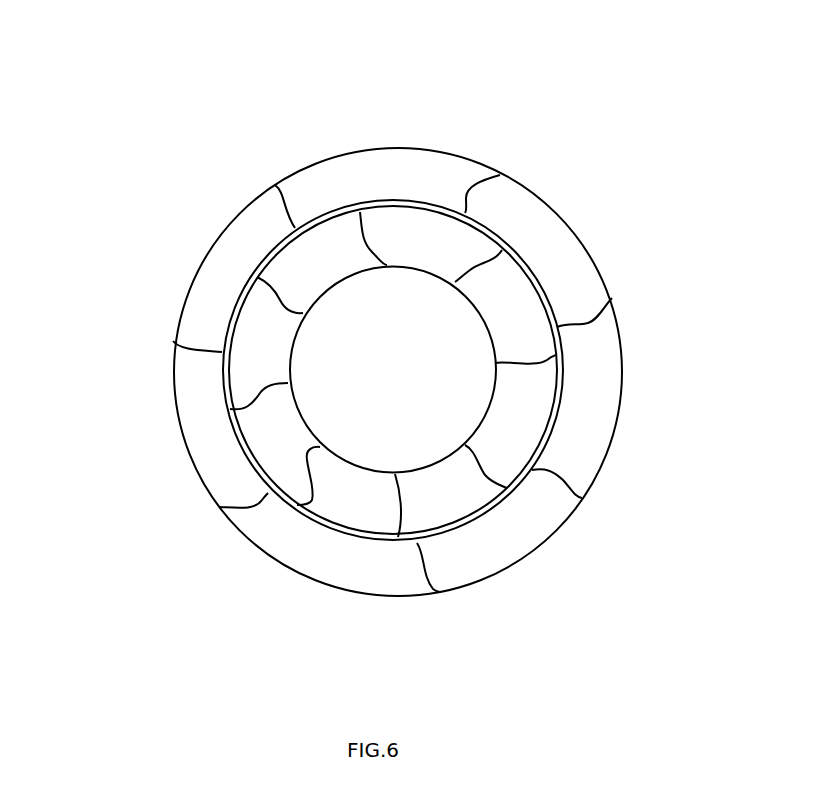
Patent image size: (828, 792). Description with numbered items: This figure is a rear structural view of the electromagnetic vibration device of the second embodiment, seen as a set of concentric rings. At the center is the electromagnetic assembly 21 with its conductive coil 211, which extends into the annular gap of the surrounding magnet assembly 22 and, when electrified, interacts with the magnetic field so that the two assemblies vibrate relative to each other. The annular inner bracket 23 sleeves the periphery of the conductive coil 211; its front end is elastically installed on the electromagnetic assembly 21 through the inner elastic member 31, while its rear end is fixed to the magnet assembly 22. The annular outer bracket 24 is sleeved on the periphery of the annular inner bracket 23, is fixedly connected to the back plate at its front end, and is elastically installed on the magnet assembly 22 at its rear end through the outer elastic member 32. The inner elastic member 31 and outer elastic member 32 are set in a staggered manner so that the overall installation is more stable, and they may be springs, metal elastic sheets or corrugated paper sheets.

The electromagnetic assembly 21 is at (425, 486).
The conductive coil 211 is at (440, 462).
The magnet assembly 22 is at (218, 382).
The annular inner bracket 23 is at (409, 207).
The annular outer bracket 24 is at (220, 517).
The inner elastic member 31 is at (542, 362).
The outer elastic member 32 is at (280, 205).